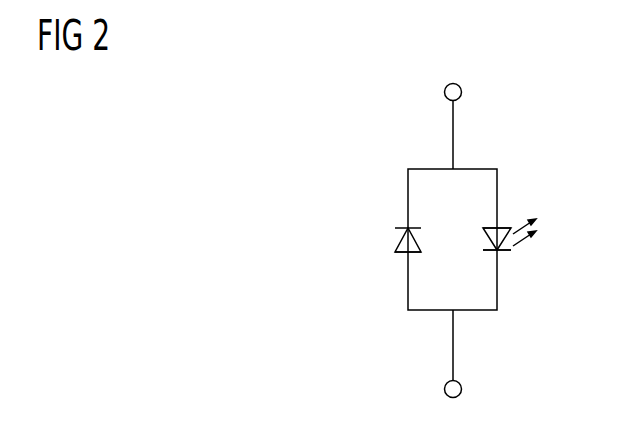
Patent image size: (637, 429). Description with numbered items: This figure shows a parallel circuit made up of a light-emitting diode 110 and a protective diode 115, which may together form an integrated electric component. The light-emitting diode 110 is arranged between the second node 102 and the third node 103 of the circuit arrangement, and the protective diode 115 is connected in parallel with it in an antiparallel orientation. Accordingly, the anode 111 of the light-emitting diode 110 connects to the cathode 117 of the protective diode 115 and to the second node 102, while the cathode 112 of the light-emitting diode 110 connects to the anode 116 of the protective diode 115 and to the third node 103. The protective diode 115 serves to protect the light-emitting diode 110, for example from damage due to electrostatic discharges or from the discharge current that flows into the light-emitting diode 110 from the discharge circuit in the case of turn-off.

The second node 102 is at (462, 92).
The third node 103 is at (462, 389).
The light-emitting diode 110 is at (540, 229).
The anode of the light-emitting diode 111 is at (500, 227).
The cathode of the light-emitting diode 112 is at (500, 251).
The protective diode 115 is at (399, 243).
The anode of the protective diode 116 is at (405, 252).
The cathode of the protective diode 117 is at (407, 226).